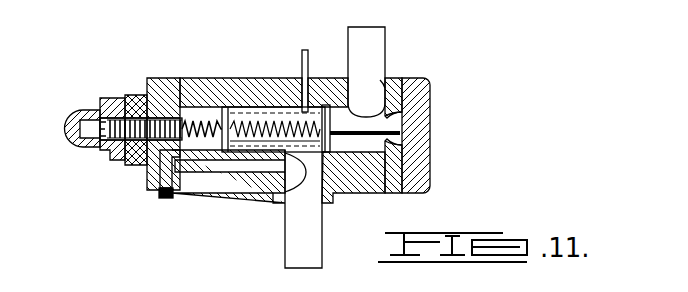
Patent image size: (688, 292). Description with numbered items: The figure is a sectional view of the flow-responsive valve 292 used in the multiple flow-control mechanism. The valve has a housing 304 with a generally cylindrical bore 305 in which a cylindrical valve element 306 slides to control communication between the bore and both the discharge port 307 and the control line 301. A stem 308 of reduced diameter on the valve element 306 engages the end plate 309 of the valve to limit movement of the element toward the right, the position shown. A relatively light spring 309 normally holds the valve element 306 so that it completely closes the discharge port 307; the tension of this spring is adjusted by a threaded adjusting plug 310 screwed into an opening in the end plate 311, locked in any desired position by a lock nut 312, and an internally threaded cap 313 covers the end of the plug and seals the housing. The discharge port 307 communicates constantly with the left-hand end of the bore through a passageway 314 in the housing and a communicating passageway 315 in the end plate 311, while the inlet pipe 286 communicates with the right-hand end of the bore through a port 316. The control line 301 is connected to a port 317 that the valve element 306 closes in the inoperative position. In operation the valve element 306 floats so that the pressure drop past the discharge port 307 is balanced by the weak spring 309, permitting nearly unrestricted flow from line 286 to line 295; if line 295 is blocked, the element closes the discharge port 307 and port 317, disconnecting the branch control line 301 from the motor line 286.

The inlet pipe 286 is at (373, 50).
The valve 292 is at (238, 77).
The line 295 is at (305, 258).
The control line 301 is at (308, 51).
The housing 304 is at (386, 194).
The bore 305 is at (431, 147).
The valve element 306 is at (263, 108).
The discharge port 307 is at (286, 200).
The stem 308 is at (431, 118).
The spring 309 is at (183, 122).
The adjusting plug 310 is at (147, 118).
The end plate 311 is at (158, 82).
The lock nut 312 is at (130, 165).
The cap 313 is at (82, 108).
The passageway 314 is at (203, 174).
The passageway 315 is at (163, 178).
The port 316 is at (383, 80).
The port 317 is at (316, 84).